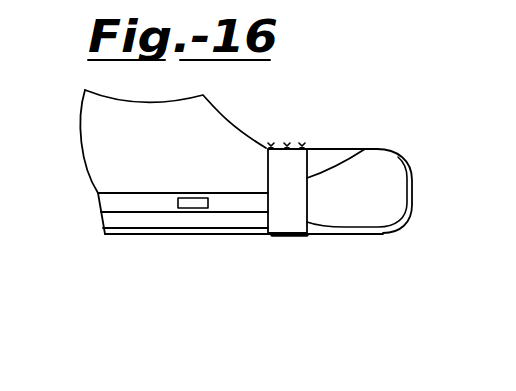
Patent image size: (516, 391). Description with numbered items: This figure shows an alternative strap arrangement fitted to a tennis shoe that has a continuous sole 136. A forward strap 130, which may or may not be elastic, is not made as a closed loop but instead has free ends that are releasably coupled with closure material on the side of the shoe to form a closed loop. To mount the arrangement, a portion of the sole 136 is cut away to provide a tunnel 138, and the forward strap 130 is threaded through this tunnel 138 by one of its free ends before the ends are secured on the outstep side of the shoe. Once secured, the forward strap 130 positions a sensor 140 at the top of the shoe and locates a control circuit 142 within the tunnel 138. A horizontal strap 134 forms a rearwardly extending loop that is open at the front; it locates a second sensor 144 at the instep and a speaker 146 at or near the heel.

The forward strap 130 is at (357, 149).
The horizontal strap 134 is at (228, 202).
The continuous sole 136 is at (220, 237).
The tunnel 138 is at (328, 224).
The sensor 140 is at (272, 146).
The control circuit 142 is at (285, 236).
The sensor 144 is at (187, 209).
The speaker 146 is at (97, 193).